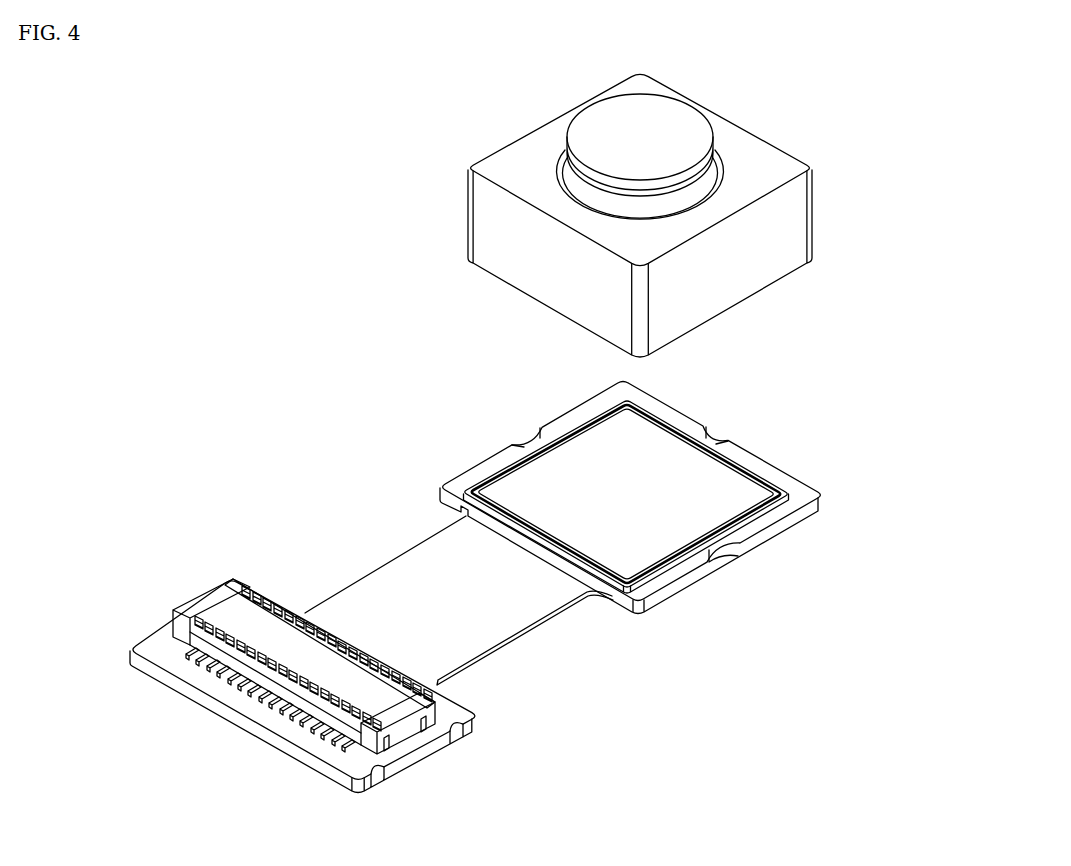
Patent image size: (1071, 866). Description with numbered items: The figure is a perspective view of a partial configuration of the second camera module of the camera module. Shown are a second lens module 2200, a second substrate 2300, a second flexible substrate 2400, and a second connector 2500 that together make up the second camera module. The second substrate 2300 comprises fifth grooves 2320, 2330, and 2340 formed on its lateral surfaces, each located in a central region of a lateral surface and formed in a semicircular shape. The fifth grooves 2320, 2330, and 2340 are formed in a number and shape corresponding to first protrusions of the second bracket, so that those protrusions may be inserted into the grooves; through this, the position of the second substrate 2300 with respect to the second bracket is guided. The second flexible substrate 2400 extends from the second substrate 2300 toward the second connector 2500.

The second lens module 2200 is at (805, 208).
The second substrate 2300 is at (677, 494).
The fifth groove 2320 is at (533, 437).
The fifth groove 2330 is at (720, 435).
The fifth groove 2340 is at (720, 560).
The second flexible substrate 2400 is at (498, 627).
The second connector 2500 is at (418, 750).